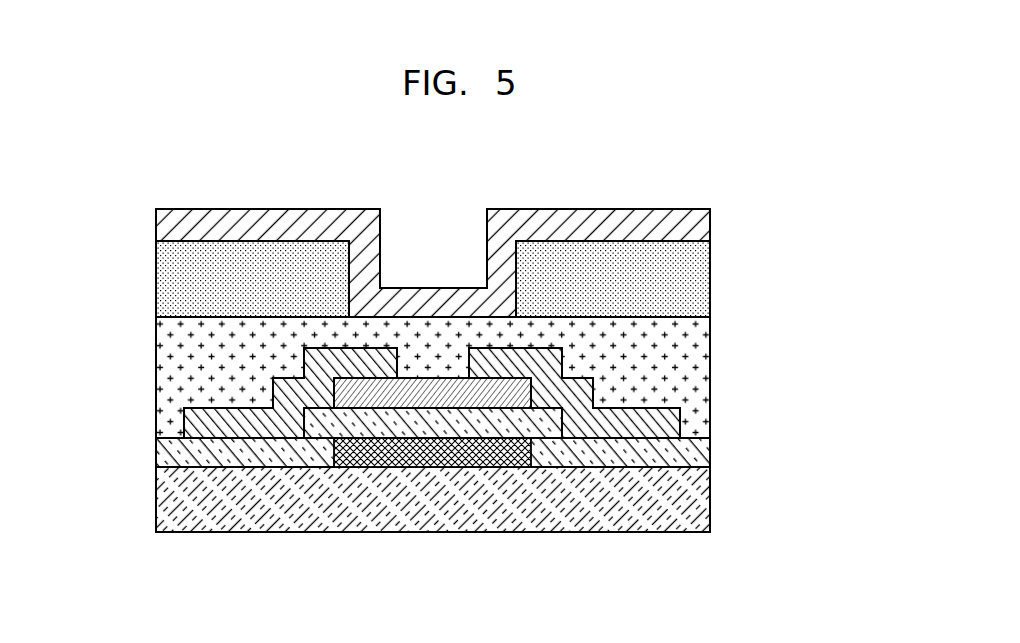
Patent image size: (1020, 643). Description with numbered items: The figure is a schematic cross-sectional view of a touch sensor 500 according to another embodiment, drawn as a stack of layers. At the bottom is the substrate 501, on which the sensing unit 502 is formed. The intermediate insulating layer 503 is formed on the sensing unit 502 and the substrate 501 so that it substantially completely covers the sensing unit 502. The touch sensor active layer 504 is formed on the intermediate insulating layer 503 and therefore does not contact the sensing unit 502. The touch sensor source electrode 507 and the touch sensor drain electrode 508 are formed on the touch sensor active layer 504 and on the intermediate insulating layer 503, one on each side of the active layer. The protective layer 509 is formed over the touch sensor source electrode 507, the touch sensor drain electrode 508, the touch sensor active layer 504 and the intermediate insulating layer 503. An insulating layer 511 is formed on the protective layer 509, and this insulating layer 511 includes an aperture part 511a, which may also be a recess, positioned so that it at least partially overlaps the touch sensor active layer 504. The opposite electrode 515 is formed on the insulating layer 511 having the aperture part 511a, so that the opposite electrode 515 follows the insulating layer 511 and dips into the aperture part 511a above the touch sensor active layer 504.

The touch sensor 500 is at (645, 166).
The substrate 501 is at (697, 501).
The sensing unit 502 is at (475, 447).
The intermediate insulating layer 503 is at (697, 457).
The touch sensor active layer 504 is at (379, 398).
The touch sensor source electrode 507 is at (200, 426).
The touch sensor drain electrode 508 is at (665, 427).
The protective layer 509 is at (697, 354).
The insulating layer 511 is at (170, 277).
The aperture part 511a is at (350, 270).
The opposite electrode 515 is at (700, 228).